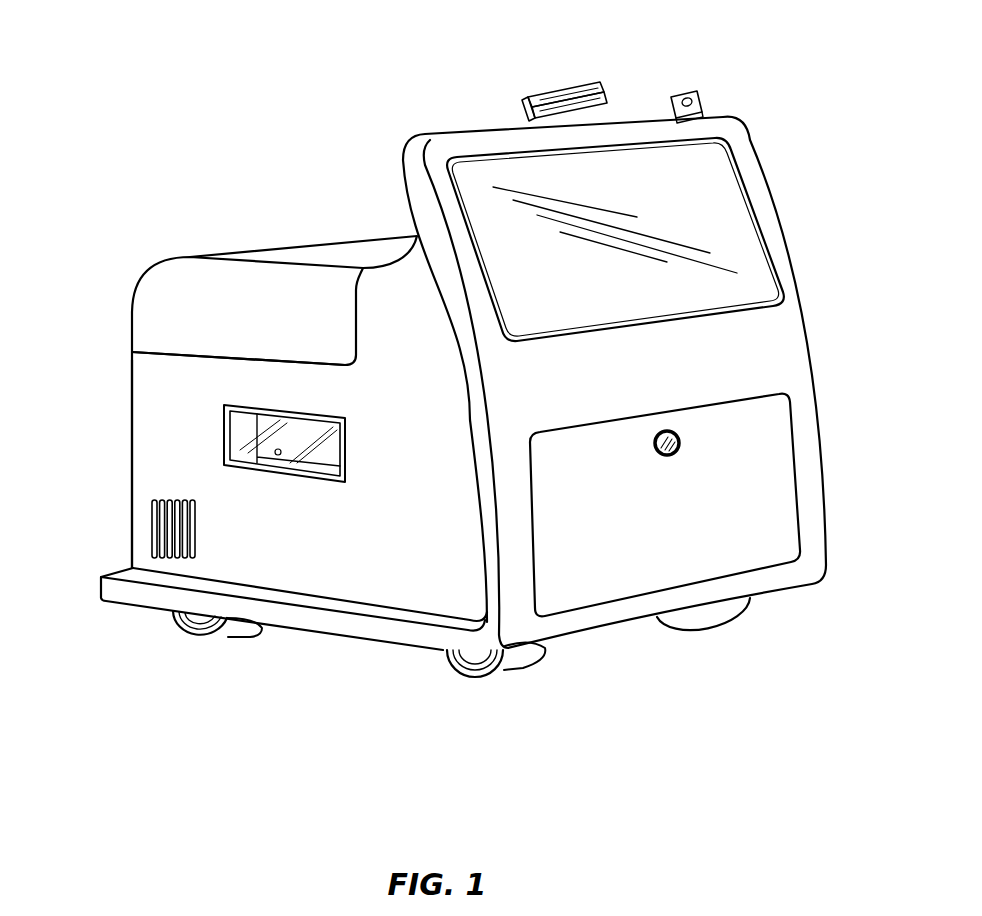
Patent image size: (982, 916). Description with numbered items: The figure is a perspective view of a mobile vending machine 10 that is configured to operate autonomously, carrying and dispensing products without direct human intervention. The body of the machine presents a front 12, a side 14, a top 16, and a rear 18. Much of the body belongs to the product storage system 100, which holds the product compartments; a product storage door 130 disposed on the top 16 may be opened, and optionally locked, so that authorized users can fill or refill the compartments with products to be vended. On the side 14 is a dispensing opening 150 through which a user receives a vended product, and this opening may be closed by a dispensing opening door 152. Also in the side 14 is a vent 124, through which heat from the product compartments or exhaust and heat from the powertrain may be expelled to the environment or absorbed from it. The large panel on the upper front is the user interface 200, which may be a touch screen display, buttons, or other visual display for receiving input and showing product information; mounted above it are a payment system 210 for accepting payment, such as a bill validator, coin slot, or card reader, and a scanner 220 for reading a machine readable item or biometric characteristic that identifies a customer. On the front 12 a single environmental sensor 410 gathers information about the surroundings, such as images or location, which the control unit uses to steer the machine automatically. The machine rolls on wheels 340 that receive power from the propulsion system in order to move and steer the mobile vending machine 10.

The mobile vending machine 10 is at (779, 73).
The front 12 is at (783, 342).
The side 14 is at (180, 375).
The top 16 is at (490, 132).
The rear 18 is at (126, 392).
The product storage system 100 is at (361, 230).
The vent 124 is at (147, 531).
The product storage door 130 is at (172, 280).
The dispensing opening 150 is at (217, 458).
The dispensing opening door 152 is at (242, 431).
The user interface 200 is at (732, 207).
The payment system 210 is at (578, 100).
The scanner 220 is at (687, 92).
The wheels 340 is at (247, 628).
The environmental sensor 410 is at (680, 443).